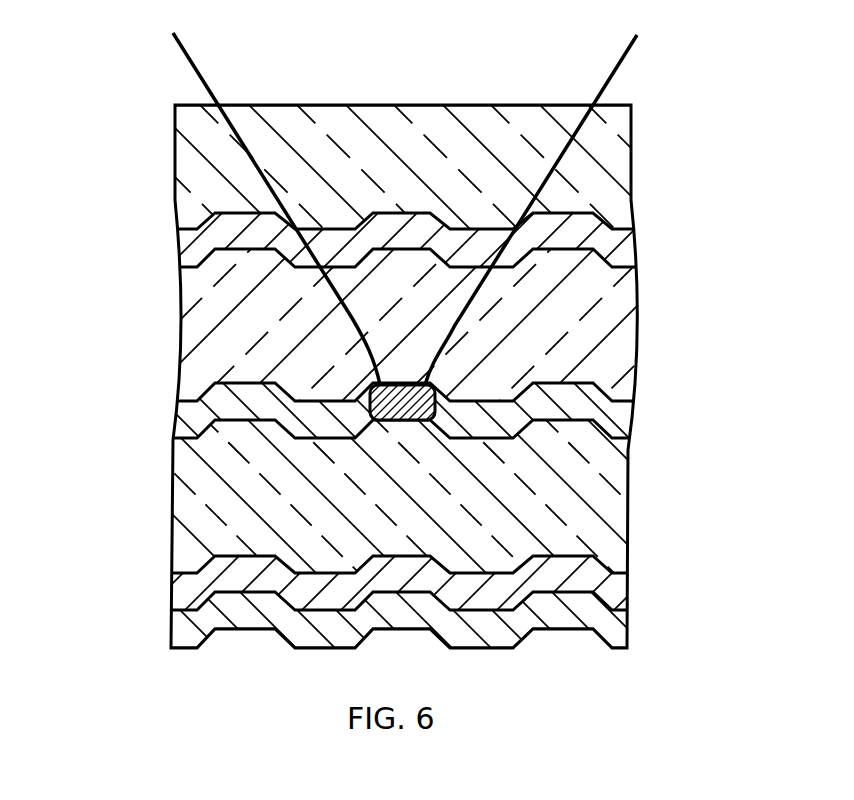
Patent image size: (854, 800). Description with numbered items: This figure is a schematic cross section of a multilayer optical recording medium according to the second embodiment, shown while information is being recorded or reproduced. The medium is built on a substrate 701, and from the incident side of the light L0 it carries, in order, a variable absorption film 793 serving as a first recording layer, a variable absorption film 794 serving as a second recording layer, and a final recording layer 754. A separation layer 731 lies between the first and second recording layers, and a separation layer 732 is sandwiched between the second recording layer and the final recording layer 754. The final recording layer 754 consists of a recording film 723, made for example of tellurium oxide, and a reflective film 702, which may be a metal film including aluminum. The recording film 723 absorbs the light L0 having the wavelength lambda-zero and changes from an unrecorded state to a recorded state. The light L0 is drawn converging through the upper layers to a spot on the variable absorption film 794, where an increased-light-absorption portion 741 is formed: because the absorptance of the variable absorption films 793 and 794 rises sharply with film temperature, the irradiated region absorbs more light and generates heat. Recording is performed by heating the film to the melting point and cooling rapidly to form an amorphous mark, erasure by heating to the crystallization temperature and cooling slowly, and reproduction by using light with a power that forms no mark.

The substrate 701 is at (623, 136).
The variable absorption film 793 is at (623, 249).
The separation layer 731 is at (623, 328).
The increased-light-absorption portion 741 is at (372, 389).
The variable absorption film 794 is at (623, 424).
The separation layer 732 is at (623, 523).
The recording film 723 is at (623, 586).
The reflective film 702 is at (623, 634).
The final recording layer 754 is at (427, 380).
The light L0 is at (615, 73).